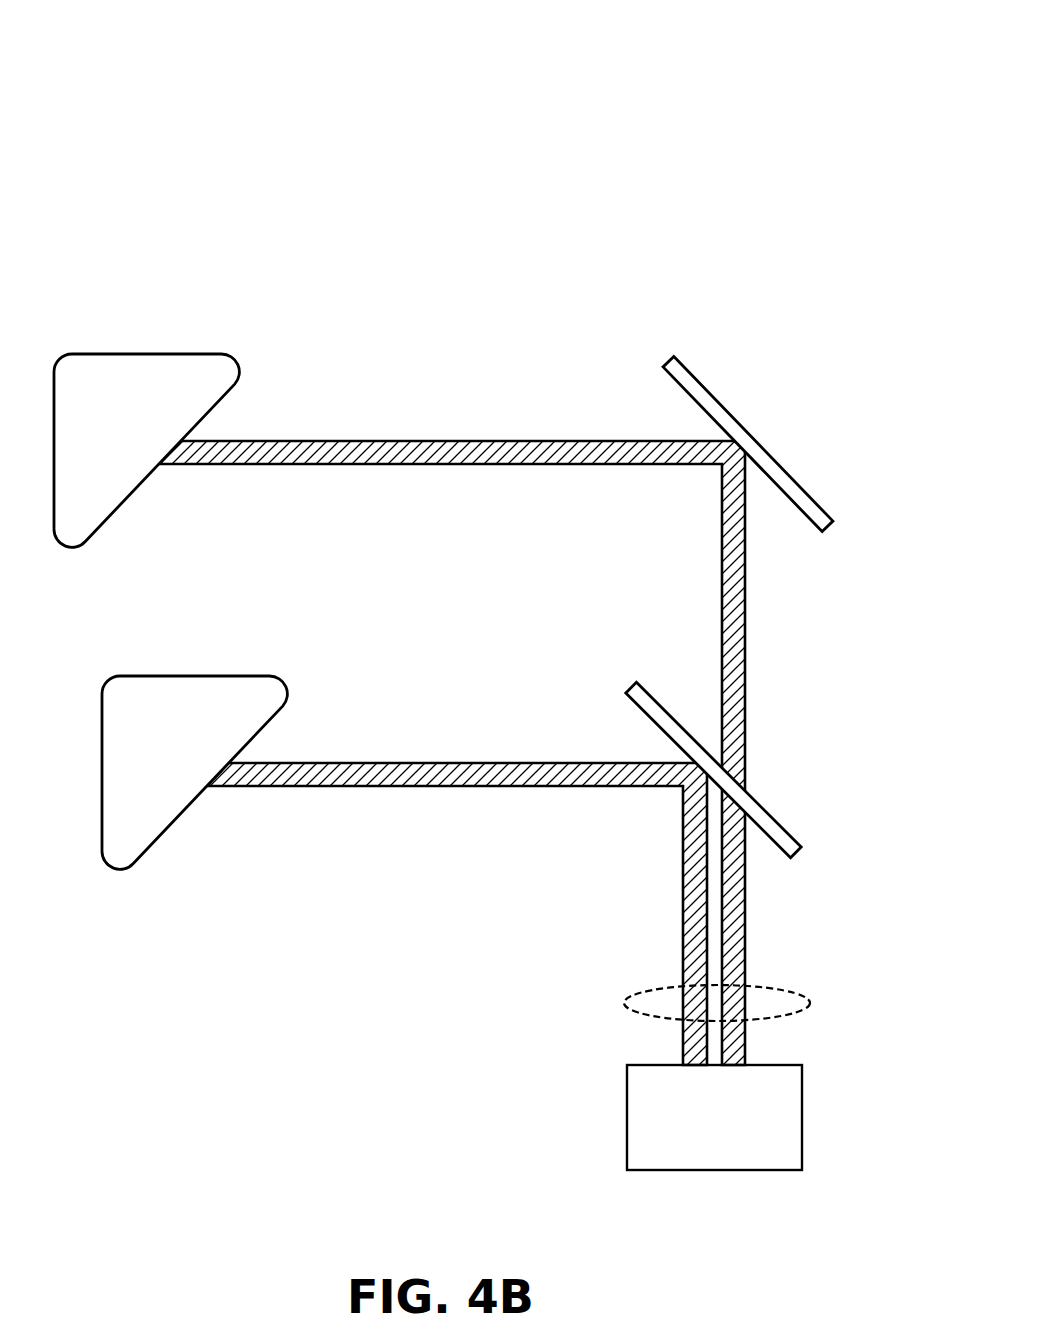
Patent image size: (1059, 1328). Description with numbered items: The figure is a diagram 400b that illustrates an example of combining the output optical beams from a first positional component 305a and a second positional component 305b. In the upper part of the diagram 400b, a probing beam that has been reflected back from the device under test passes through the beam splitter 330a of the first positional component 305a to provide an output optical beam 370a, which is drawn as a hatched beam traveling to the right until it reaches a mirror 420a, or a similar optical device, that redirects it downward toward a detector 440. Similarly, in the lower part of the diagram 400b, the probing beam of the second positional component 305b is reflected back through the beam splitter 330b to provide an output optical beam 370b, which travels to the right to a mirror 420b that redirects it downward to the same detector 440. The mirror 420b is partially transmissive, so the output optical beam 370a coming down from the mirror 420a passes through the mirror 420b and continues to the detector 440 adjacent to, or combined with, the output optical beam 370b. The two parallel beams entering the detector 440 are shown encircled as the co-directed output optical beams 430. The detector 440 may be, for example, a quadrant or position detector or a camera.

The diagram 400b is at (616, 53).
The first positional component 305a is at (251, 316).
The second positional component 305b is at (251, 639).
The beam splitter 330a is at (148, 448).
The beam splitter 330b is at (198, 767).
The output optical beam 370a is at (510, 440).
The output optical beam 370b is at (558, 762).
The mirror 420a is at (712, 400).
The mirror 420b is at (763, 806).
The co-directed output optical beams 430 is at (623, 1001).
The detector 440 is at (692, 1152).